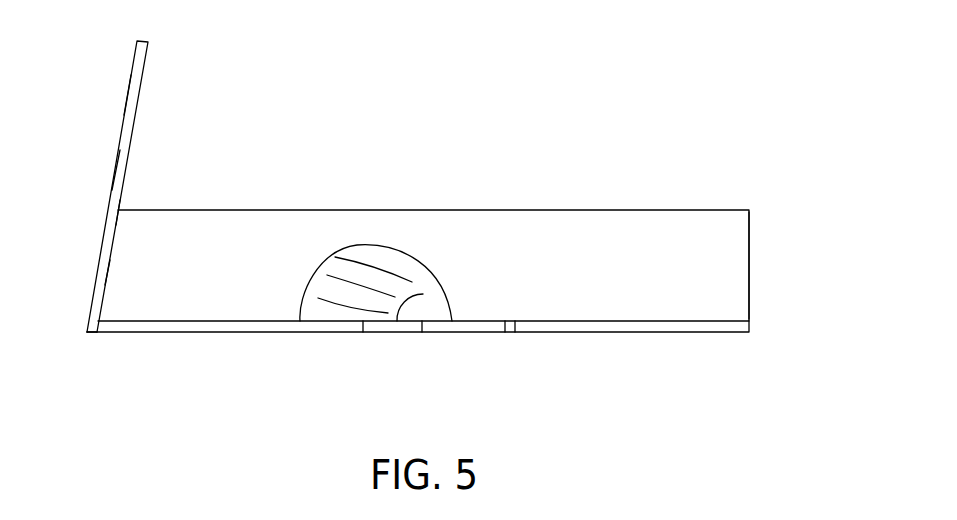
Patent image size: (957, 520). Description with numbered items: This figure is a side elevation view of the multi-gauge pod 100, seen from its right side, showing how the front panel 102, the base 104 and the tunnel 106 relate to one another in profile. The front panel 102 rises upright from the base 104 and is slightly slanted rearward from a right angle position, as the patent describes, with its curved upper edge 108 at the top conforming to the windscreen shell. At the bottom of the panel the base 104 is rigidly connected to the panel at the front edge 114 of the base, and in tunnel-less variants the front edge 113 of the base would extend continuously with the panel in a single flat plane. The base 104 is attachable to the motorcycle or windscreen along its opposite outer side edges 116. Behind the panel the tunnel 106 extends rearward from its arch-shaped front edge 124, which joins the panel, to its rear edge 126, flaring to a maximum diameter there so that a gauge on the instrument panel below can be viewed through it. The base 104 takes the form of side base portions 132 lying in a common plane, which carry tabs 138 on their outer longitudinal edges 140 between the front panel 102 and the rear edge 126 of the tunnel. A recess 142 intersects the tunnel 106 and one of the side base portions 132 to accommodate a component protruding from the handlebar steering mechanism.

The multi-gauge pod 100 is at (506, 76).
The front panel 102 is at (143, 91).
The base 104 is at (172, 346).
The tunnel 106 is at (539, 205).
The upper edge 108 is at (112, 174).
The front edge of the base 113 is at (98, 333).
The front edge 114 is at (128, 97).
The outer side edges 116 is at (113, 214).
The front edge of the tunnel 124 is at (109, 271).
The rear edge of the tunnel 126 is at (749, 240).
The side base portions 132 is at (248, 333).
The tabs 138 is at (433, 327).
The outer longitudinal edges 140 is at (595, 325).
The recess 142 is at (417, 268).